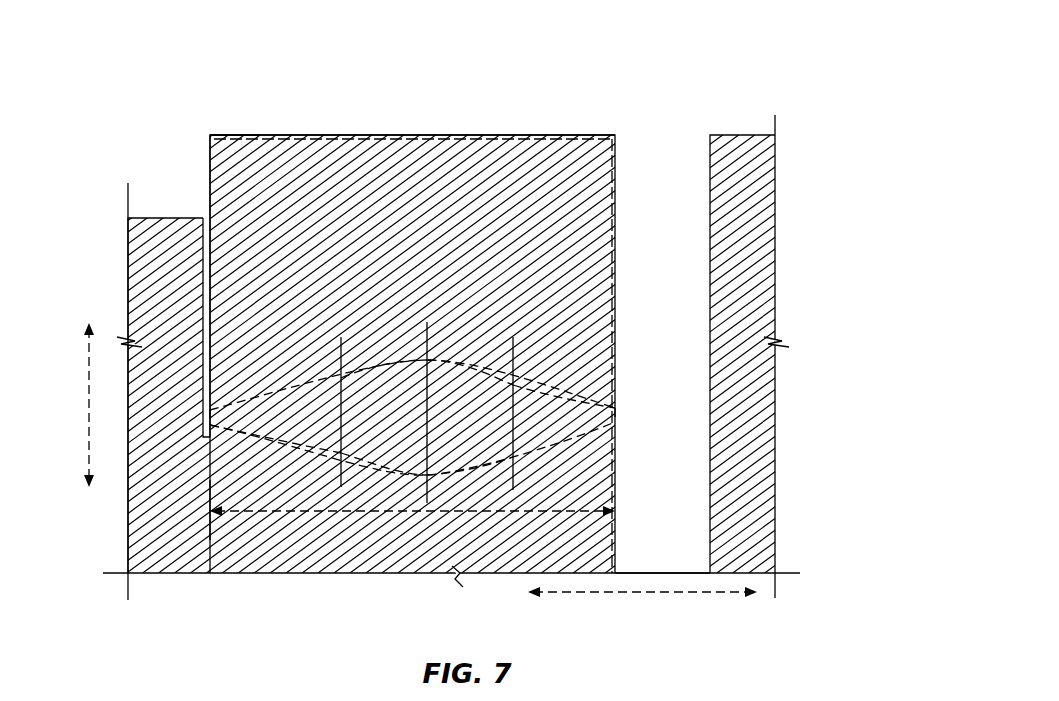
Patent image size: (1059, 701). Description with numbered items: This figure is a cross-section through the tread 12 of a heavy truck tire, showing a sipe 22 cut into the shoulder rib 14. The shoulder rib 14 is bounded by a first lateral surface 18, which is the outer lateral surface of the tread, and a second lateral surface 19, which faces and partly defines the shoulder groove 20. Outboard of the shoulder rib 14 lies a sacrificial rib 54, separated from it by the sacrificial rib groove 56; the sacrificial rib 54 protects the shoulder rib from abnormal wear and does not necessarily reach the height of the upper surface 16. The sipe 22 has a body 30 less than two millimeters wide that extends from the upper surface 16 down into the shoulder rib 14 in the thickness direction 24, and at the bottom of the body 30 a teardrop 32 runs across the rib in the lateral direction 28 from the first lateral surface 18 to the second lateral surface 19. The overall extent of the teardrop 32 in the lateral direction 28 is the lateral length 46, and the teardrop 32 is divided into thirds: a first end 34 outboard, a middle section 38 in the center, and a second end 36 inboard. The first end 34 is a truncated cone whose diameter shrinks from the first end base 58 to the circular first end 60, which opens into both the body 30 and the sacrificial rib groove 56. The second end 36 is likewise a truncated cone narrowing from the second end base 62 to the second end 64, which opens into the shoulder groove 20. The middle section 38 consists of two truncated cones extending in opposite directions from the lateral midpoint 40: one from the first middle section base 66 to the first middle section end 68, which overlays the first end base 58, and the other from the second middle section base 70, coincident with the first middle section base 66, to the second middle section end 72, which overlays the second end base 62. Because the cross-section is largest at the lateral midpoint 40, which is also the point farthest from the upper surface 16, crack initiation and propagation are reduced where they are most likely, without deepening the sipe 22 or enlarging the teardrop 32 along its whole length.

The tread 12 is at (803, 110).
The shoulder rib 14 is at (219, 151).
The upper surface 16 is at (552, 130).
The first lateral surface 18 is at (210, 180).
The second lateral surface 19 is at (615, 272).
The shoulder groove 20 is at (656, 142).
The sipe 22 is at (483, 150).
The thickness direction 24 is at (88, 410).
The lateral direction 28 is at (655, 595).
The body 30 is at (362, 150).
The teardrop 32 is at (462, 367).
The first end 34 is at (275, 392).
The second end 36 is at (545, 392).
The middle section 38 is at (398, 367).
The lateral midpoint 40 is at (430, 480).
The lateral length 46 is at (332, 512).
The sacrificial rib 54 is at (138, 246).
The sacrificial rib groove 56 is at (212, 250).
The first end base 58 is at (343, 407).
The first end 60 is at (210, 422).
The second end base 62 is at (505, 433).
The second end 64 is at (615, 418).
The first middle section base 66 is at (425, 456).
The first middle section end 68 is at (340, 443).
The second middle section base 70 is at (430, 408).
The second middle section end 72 is at (515, 405).